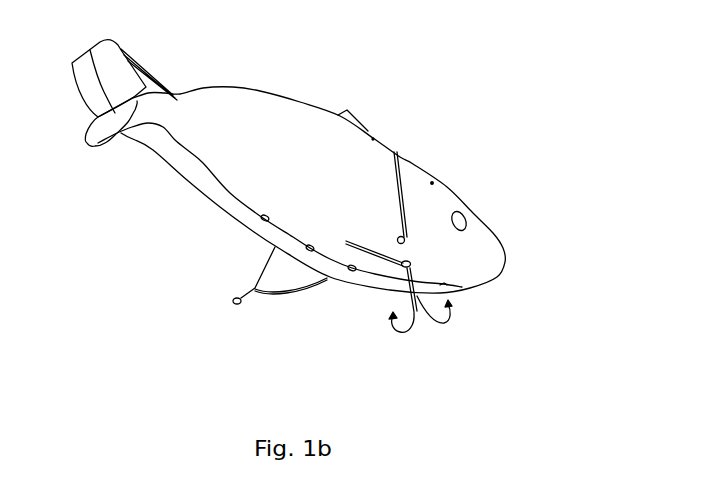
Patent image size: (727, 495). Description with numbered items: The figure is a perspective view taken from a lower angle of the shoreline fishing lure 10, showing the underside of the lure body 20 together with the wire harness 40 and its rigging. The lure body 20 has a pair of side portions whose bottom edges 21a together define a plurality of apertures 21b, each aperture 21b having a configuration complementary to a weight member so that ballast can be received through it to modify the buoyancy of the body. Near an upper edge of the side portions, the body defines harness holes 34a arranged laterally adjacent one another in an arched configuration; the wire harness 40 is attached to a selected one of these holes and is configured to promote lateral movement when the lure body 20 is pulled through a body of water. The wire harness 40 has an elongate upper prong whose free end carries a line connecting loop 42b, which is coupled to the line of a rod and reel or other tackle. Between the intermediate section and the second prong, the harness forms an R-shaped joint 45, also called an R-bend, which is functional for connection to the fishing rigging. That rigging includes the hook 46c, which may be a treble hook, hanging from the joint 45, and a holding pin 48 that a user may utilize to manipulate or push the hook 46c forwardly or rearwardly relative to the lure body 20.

The fishing lure 10 is at (327, 205).
The lure body 20 is at (256, 115).
The bottom edges 21a is at (177, 160).
The apertures 21b is at (304, 250).
The harness holes 34a is at (468, 165).
The wire harness 40 is at (305, 333).
The line connecting loop 42b is at (234, 310).
The joint 45 is at (410, 244).
The hook 46c is at (440, 330).
The holding pin 48 is at (362, 240).